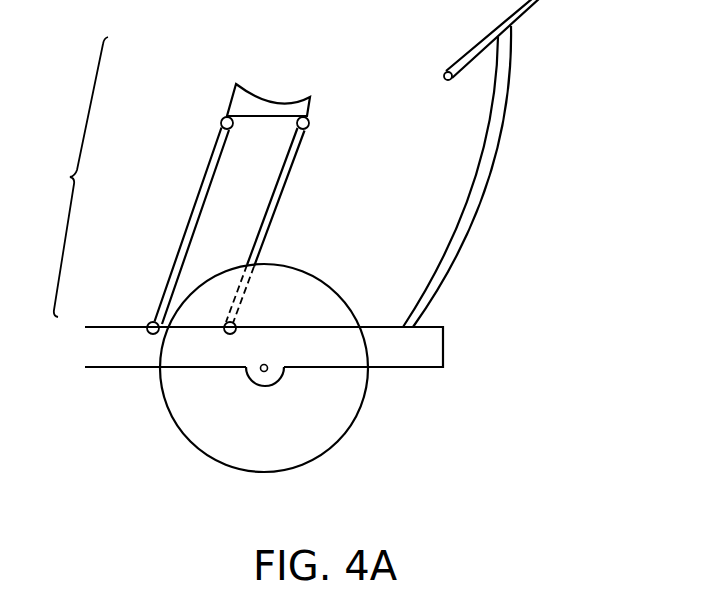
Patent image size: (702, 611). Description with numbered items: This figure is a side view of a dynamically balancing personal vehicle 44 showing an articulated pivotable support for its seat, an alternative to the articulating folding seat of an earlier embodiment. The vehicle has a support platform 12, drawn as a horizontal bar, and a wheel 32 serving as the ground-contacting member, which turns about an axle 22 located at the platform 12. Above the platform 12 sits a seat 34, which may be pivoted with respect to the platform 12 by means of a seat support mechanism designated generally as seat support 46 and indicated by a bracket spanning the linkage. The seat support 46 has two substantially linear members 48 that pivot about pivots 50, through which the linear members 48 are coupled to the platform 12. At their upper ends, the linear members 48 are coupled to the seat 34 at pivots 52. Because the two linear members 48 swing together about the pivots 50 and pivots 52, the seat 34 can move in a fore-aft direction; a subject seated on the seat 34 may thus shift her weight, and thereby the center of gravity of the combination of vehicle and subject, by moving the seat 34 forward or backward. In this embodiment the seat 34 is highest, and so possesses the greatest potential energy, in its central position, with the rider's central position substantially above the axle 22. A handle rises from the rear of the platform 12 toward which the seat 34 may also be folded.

The support platform 12 is at (83, 368).
The axle 22 is at (261, 372).
The wheel 32 is at (334, 424).
The seat 34 is at (231, 100).
The balancing personal vehicle 44 is at (600, 113).
The seat support mechanism 46 is at (70, 174).
The linear members 48 is at (188, 223).
The pivots 50 is at (149, 324).
The pivots 52 is at (220, 124).